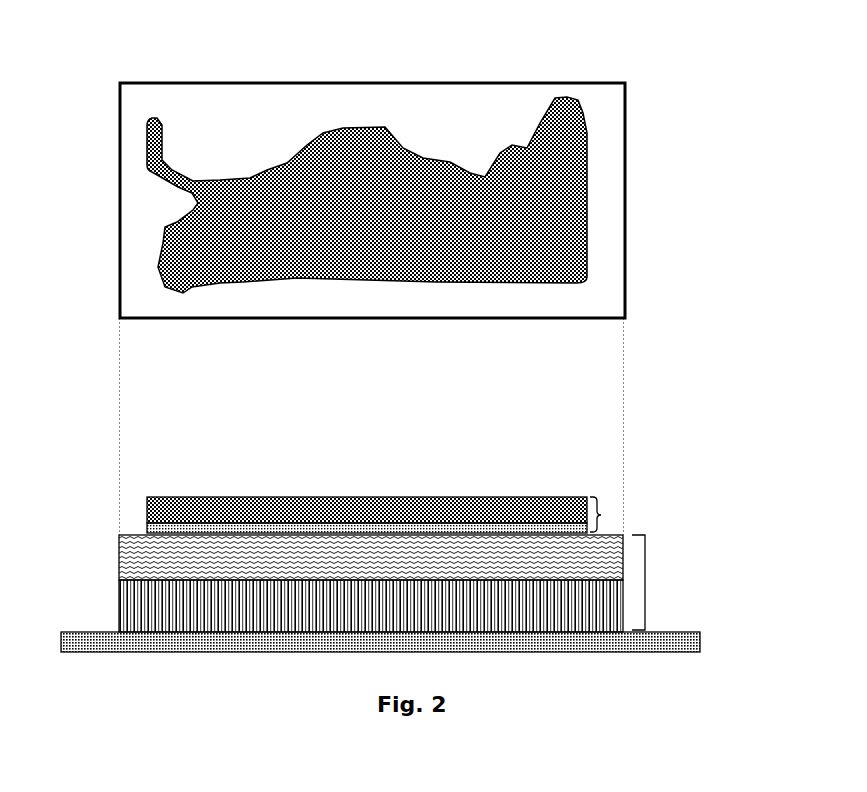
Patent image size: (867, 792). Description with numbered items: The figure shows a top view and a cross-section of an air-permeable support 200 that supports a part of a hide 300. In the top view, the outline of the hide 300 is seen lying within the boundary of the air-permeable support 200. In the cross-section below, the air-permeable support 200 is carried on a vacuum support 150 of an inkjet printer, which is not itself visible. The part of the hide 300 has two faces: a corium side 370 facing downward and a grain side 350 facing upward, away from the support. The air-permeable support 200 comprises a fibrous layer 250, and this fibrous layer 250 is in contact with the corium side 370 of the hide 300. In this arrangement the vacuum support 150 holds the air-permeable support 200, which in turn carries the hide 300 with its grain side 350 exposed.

The vacuum support 150 is at (683, 642).
The air-permeable support 200 is at (432, 123).
The fibrous layer 250 is at (145, 566).
The hide 300 is at (305, 145).
The grain side 350 is at (184, 497).
The corium side 370 is at (150, 528).